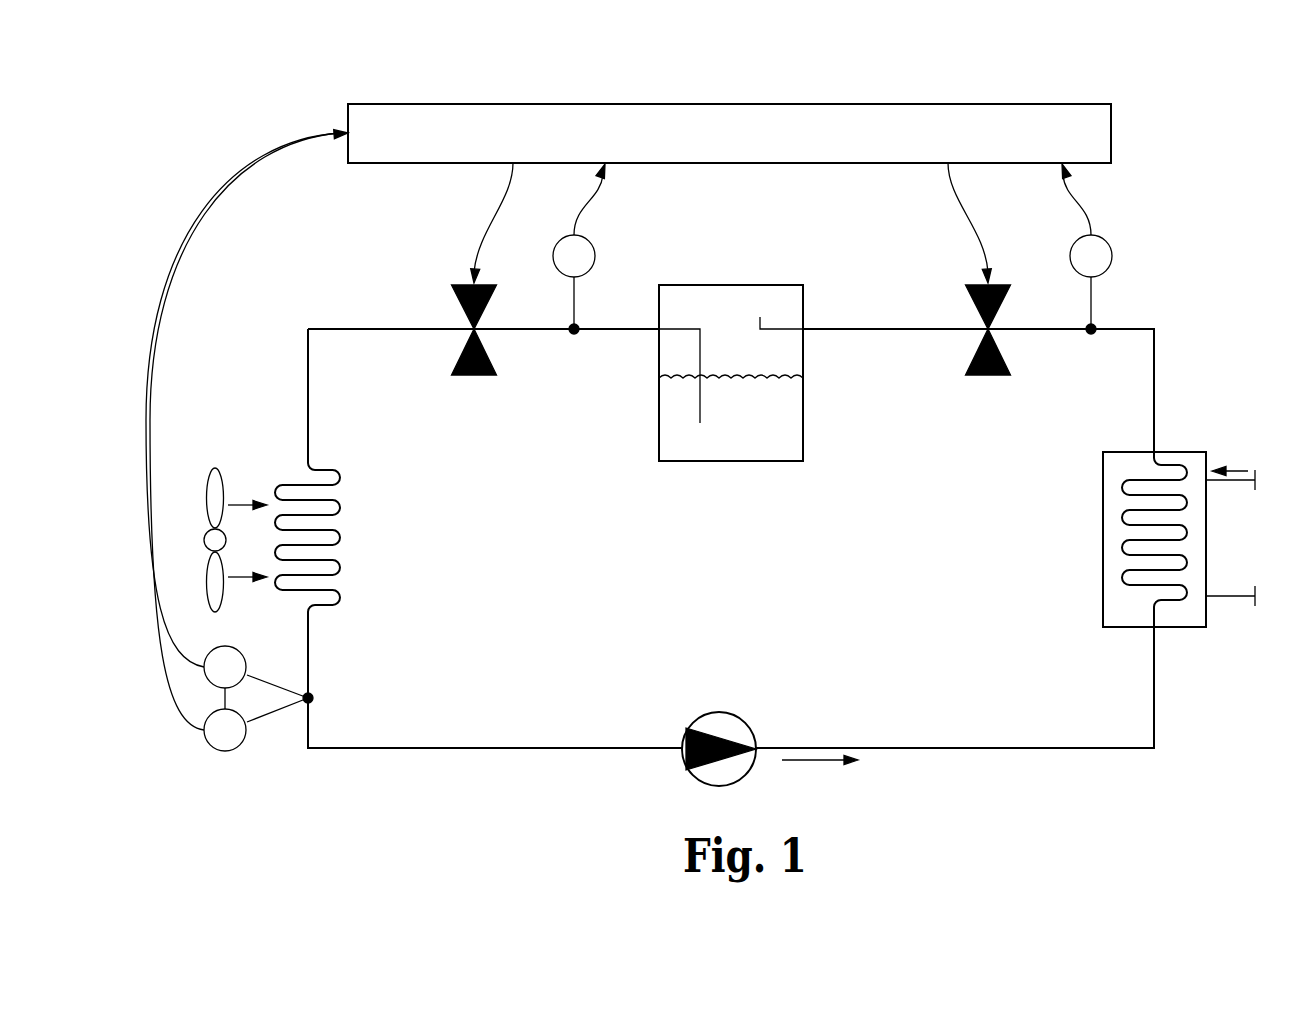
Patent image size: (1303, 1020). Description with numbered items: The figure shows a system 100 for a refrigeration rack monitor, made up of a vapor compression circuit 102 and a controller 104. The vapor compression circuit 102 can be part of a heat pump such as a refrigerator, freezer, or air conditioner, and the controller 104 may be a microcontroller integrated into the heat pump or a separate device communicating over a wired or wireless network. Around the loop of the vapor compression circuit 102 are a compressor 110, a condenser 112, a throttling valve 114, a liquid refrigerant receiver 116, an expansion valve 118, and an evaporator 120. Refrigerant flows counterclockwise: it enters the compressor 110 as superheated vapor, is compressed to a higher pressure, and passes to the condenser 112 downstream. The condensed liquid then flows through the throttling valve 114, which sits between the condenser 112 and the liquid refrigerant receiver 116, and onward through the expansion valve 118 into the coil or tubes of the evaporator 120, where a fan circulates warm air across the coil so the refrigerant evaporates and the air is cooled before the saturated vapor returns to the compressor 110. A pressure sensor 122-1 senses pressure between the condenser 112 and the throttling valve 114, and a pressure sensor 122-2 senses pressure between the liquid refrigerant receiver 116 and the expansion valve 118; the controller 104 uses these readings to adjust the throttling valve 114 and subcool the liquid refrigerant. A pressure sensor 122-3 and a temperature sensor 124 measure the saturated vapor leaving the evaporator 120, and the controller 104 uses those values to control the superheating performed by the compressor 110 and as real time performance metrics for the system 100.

The system 100 is at (258, 106).
The vapor compression circuit 102 is at (1193, 323).
The controller 104 is at (500, 103).
The compressor 110 is at (746, 777).
The condenser 112 is at (1110, 586).
The throttling valve 114 is at (965, 296).
The liquid refrigerant receiver 116 is at (669, 430).
The expansion valve 118 is at (452, 296).
The evaporator 120 is at (285, 462).
The pressure sensor 122-1 is at (1112, 256).
The pressure sensor 122-2 is at (595, 256).
The pressure sensor 122-3 is at (240, 748).
The temperature sensor 124 is at (241, 648).